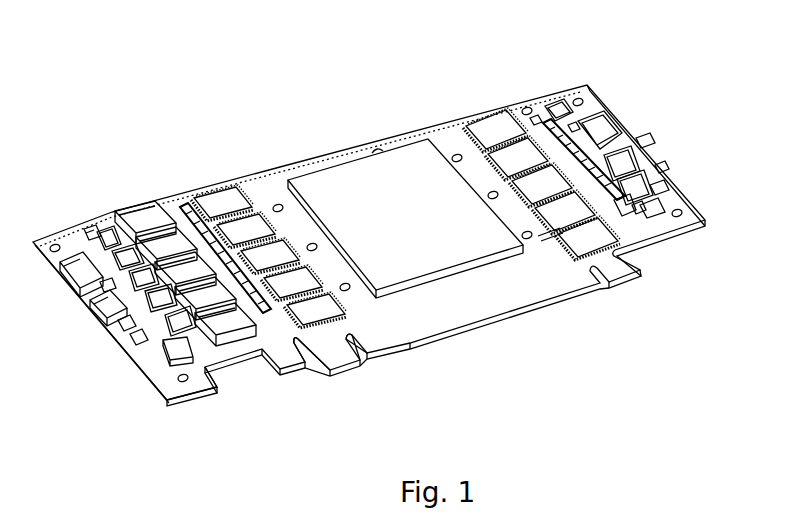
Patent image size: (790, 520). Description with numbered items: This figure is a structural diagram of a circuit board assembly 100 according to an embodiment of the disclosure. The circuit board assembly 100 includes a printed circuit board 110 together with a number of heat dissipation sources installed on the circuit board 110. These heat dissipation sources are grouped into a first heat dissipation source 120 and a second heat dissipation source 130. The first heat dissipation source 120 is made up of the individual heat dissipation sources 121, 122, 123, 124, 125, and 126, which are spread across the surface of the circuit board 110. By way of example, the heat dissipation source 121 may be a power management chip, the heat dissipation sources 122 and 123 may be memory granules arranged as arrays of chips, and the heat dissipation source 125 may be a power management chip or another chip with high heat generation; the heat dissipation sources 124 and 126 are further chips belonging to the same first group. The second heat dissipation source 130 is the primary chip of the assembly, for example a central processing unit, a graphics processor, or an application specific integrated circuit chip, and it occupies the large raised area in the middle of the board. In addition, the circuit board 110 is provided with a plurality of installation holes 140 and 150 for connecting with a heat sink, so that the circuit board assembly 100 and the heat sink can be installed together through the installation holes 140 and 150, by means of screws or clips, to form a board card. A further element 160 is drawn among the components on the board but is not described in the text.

The circuit board assembly 100 is at (146, 92).
The printed circuit board 110 is at (395, 318).
The first heat dissipation source 120 is at (305, 312).
The heat dissipation source 121 is at (112, 210).
The heat dissipation source 122 is at (243, 223).
The heat dissipation source 123 is at (510, 160).
The heat dissipation source 124 is at (637, 218).
The heat dissipation source 125 is at (660, 217).
The heat dissipation source 126 is at (602, 138).
The second heat dissipation source 130 is at (437, 252).
The installation hole 140 is at (193, 380).
The installation hole 150 is at (538, 223).
The inductors 160 is at (173, 207).